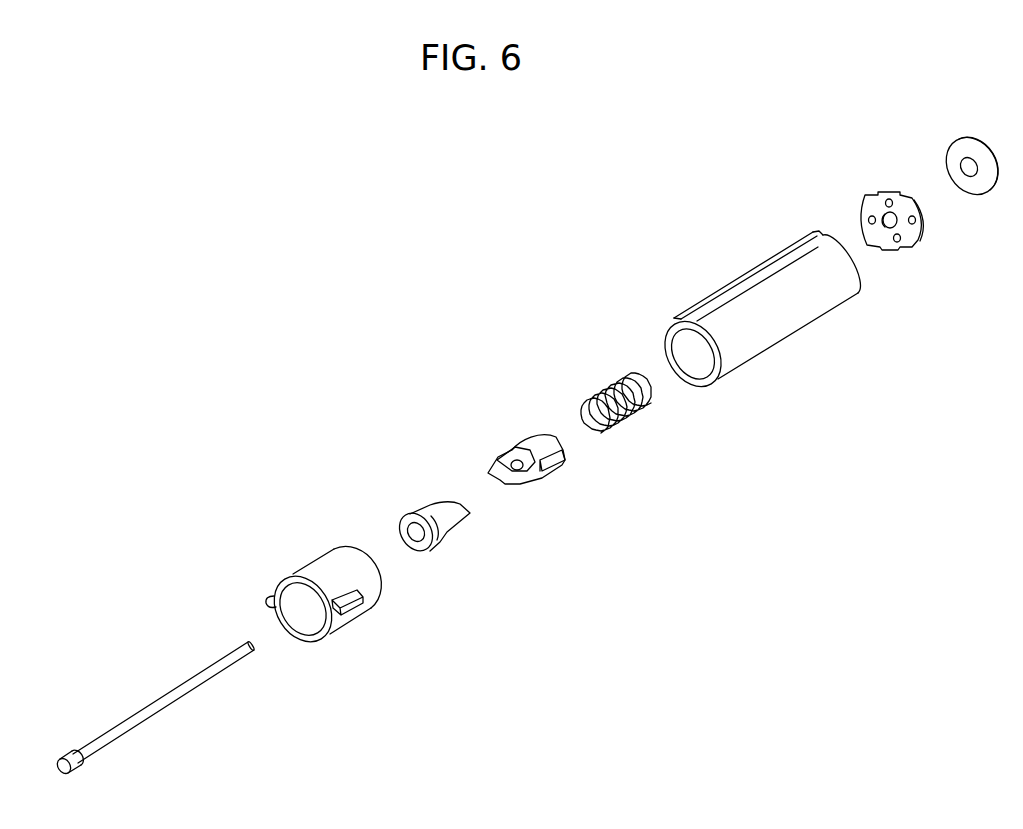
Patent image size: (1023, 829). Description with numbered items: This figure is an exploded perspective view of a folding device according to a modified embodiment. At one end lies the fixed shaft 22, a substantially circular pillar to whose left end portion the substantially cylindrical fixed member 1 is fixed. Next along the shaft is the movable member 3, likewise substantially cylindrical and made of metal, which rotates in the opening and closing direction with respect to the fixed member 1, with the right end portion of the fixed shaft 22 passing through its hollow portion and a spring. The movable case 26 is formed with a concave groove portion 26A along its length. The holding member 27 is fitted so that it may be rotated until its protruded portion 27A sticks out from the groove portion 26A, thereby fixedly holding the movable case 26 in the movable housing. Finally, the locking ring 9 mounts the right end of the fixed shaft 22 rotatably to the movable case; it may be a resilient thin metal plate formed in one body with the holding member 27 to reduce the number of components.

The fixed member 1 is at (438, 548).
The movable member 3 is at (523, 440).
The locking ring 9 is at (952, 140).
The fixed shaft 22 is at (188, 677).
The movable case 26 is at (777, 333).
The concave groove portion 26A is at (748, 282).
The holding member 27 is at (868, 190).
The protruded portion 27A is at (918, 237).